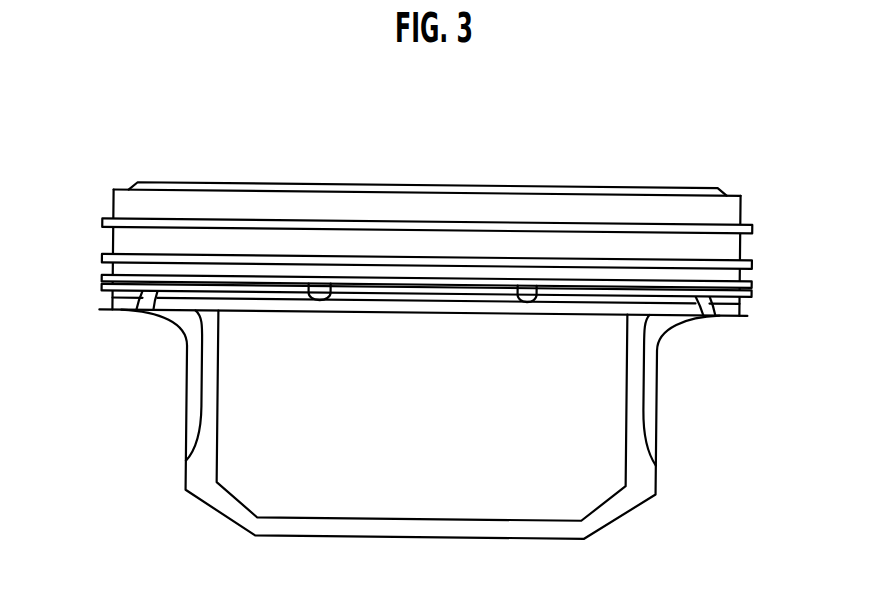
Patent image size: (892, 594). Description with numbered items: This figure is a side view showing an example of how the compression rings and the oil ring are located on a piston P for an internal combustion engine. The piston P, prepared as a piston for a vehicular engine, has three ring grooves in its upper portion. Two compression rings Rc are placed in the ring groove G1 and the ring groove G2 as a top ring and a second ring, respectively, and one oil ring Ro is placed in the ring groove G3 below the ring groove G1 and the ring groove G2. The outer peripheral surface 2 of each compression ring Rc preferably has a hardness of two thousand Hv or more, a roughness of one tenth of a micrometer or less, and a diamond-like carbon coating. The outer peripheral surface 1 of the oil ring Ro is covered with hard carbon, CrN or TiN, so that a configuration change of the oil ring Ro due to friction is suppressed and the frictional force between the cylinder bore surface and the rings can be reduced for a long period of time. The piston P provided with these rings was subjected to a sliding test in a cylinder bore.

The piston P is at (603, 409).
The outer peripheral surface of the oil ring 1 is at (450, 322).
The outer peripheral surface of the compression ring 2 is at (461, 222).
The ring groove G1 is at (523, 218).
The ring groove G2 is at (700, 254).
The ring groove G3 is at (610, 292).
The compression ring Rc is at (435, 221).
The oil ring Ro is at (423, 322).